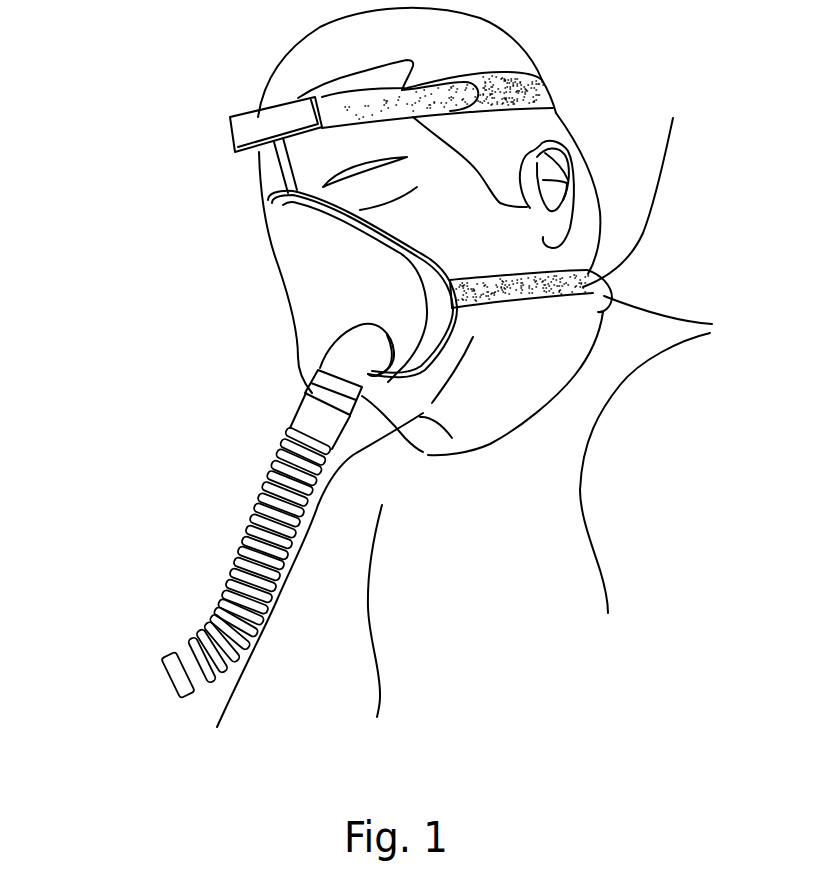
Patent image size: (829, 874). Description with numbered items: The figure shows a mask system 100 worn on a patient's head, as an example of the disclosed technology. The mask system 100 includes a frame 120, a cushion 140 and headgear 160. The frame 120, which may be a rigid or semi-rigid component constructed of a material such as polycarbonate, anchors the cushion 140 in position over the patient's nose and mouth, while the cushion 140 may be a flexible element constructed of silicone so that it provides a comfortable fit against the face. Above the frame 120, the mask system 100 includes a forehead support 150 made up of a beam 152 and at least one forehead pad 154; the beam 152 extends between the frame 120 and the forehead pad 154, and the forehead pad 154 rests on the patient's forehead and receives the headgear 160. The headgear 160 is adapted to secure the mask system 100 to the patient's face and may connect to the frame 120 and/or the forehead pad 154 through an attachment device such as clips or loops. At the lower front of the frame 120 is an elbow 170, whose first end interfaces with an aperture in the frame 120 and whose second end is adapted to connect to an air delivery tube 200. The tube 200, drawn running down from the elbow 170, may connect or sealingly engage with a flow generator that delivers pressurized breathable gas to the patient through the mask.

The mask system 100 is at (213, 280).
The frame 120 is at (293, 268).
The cushion 140 is at (395, 380).
The forehead support 150 is at (148, 141).
The beam 152 is at (272, 168).
The forehead pad 154 is at (250, 123).
The headgear 160 is at (560, 102).
The elbow 170 is at (307, 421).
The air delivery tube 200 is at (220, 600).